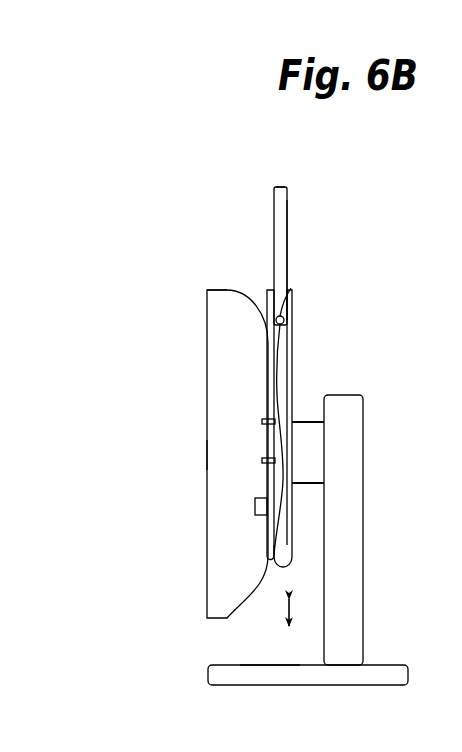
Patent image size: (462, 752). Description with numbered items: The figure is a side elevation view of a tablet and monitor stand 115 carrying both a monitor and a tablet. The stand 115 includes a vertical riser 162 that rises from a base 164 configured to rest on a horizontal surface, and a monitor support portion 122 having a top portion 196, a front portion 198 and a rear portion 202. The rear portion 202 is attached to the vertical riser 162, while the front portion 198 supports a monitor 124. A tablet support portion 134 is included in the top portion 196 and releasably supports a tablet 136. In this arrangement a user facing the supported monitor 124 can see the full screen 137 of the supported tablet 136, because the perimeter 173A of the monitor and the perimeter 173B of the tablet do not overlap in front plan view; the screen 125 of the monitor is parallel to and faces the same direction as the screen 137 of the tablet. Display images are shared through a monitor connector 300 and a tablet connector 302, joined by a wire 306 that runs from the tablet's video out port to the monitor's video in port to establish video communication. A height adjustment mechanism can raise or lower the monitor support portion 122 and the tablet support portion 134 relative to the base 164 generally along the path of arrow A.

The tablet and monitor stand 115 is at (377, 194).
The monitor support portion 122 is at (307, 366).
The monitor 124 is at (207, 326).
The screen of supported monitor 125 is at (207, 453).
The tablet support portion 134 is at (267, 346).
The tablet 136 is at (288, 240).
The screen of supported tablet 137 is at (274, 214).
The vertical riser 162 is at (364, 620).
The base 164 is at (263, 665).
The perimeter of supported monitor 173A is at (222, 302).
The perimeter of supported tablet 173B is at (286, 187).
The top portion 196 is at (313, 325).
The front portion 198 is at (251, 528).
The rear portion 202 is at (345, 529).
The monitor connector 300 is at (255, 500).
The tablet connector 302 is at (291, 288).
The wire 306 is at (277, 393).
The arrow A is at (286, 611).